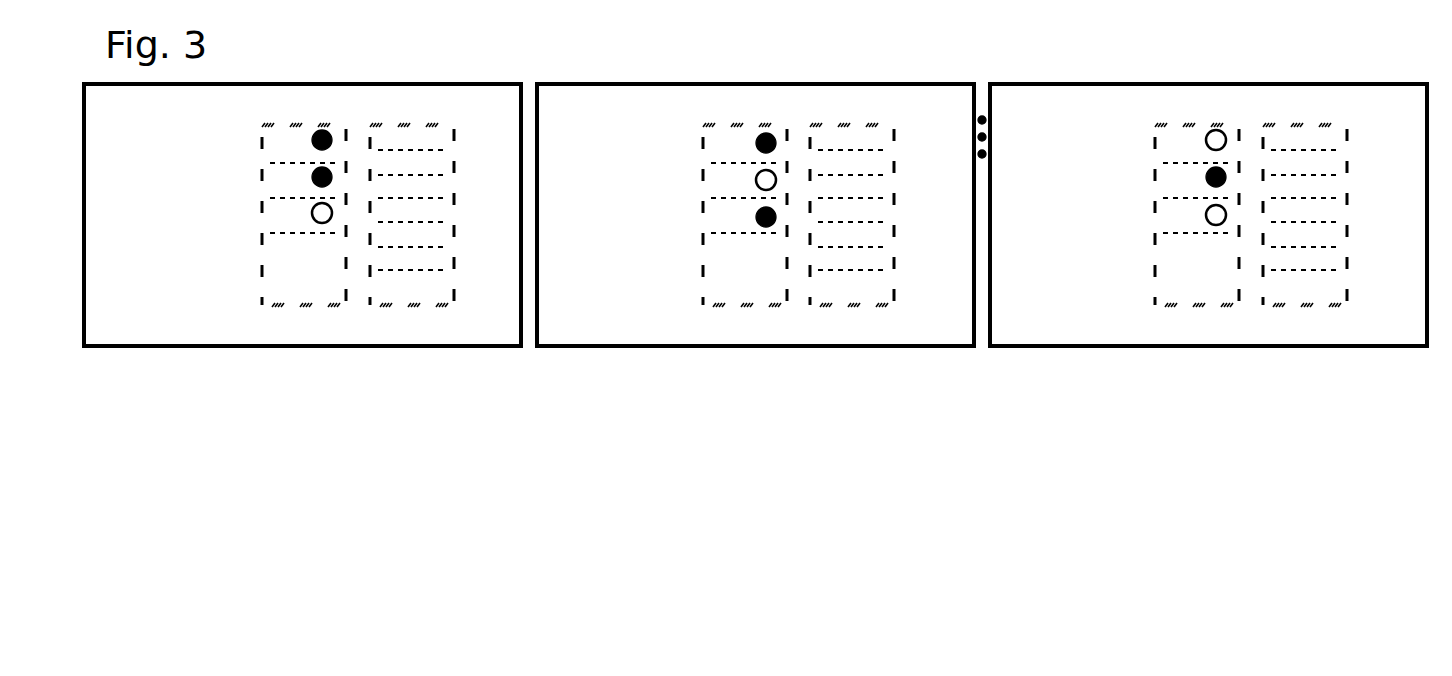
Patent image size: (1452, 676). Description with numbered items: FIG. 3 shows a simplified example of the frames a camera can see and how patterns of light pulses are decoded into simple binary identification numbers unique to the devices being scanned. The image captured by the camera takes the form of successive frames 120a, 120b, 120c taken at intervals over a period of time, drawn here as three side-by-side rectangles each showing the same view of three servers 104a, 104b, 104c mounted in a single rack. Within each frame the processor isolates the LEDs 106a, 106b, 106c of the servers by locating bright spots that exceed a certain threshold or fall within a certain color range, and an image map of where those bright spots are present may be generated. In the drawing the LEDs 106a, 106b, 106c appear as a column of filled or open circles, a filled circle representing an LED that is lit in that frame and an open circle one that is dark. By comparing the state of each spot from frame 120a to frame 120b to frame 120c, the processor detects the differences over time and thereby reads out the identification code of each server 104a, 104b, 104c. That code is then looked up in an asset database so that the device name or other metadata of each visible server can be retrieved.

The server 104a is at (1155, 142).
The server 104b is at (1155, 187).
The server 104c is at (1155, 217).
The LED 106a is at (330, 131).
The LED 106b is at (332, 171).
The LED 106c is at (333, 213).
The frame 120a is at (381, 263).
The frame 120b is at (677, 353).
The frame 120c is at (1163, 283).